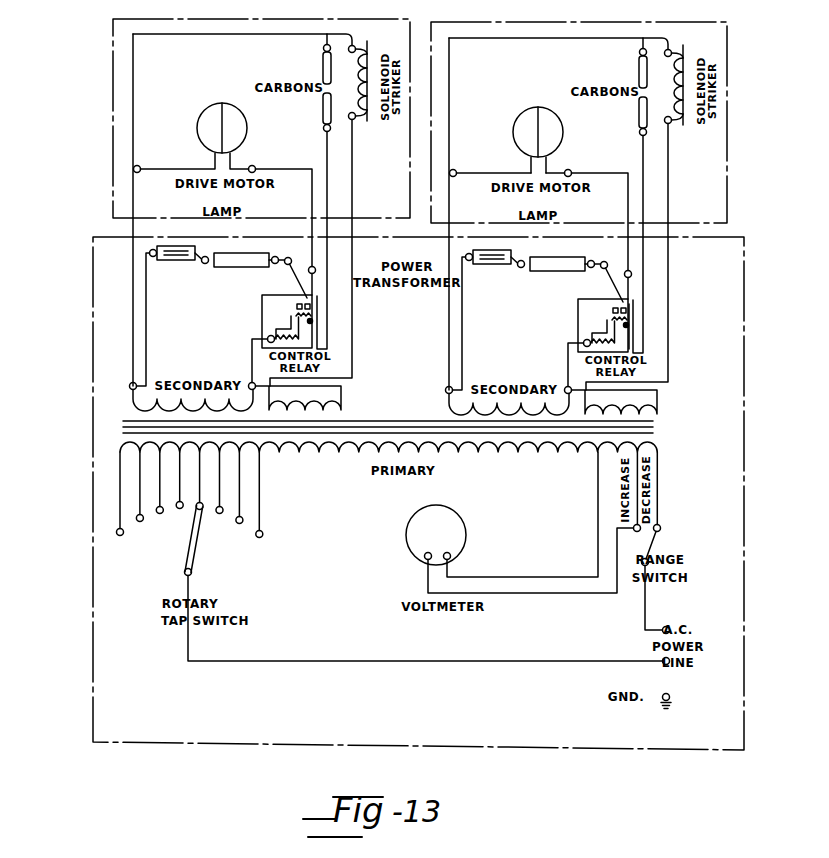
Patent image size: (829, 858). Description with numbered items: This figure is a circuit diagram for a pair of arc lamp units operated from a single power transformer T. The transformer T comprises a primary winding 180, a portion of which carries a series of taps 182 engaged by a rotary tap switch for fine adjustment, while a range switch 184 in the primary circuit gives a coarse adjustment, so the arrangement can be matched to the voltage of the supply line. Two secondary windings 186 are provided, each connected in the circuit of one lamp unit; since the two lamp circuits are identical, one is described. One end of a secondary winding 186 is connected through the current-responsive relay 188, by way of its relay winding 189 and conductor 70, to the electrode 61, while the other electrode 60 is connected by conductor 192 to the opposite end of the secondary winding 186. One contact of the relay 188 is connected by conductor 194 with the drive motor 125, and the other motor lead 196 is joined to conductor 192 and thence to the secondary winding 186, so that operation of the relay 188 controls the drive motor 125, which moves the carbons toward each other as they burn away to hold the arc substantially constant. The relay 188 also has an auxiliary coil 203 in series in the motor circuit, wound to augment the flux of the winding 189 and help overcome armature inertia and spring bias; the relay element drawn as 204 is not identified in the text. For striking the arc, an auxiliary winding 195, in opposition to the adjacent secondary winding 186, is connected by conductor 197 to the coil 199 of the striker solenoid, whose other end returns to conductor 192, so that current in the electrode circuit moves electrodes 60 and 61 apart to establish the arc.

The transformer T is at (93, 440).
The conductor 192 is at (546, 214).
The drive motor 125 is at (535, 128).
The lead 196 is at (491, 158).
The conductor 194 is at (587, 205).
The electrode 60 is at (622, 69).
The electrode 61 is at (621, 116).
The coil 199 is at (691, 106).
The conductor 70 is at (668, 245).
The current-responsive relay 188 is at (577, 318).
The auxiliary coil 203 is at (577, 322).
The relay coil 204 is at (571, 333).
The relay winding 189 is at (661, 326).
The conductor 197 is at (648, 257).
The auxiliary winding 195 is at (641, 402).
The secondary winding 186 is at (130, 403).
The primary winding 180 is at (310, 445).
The taps 182 is at (220, 514).
The range switch 184 is at (662, 541).